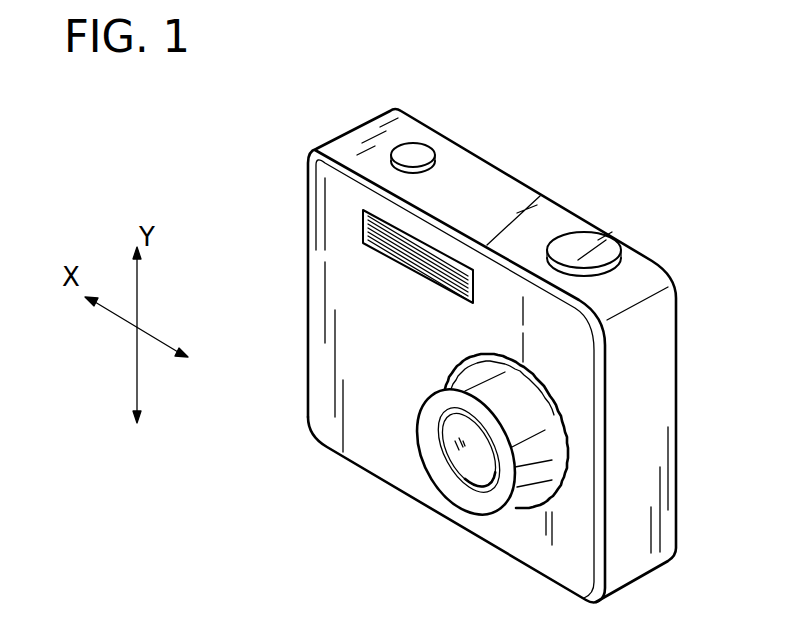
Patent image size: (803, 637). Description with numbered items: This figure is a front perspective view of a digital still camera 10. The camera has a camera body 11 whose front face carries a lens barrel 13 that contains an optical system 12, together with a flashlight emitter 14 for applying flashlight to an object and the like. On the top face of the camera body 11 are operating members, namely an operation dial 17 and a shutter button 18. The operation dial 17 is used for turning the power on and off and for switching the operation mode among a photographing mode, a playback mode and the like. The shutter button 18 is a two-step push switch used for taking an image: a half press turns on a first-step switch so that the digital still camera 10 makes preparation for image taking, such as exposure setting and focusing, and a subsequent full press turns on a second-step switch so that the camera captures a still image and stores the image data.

The digital still camera 10 is at (540, 173).
The camera body 11 is at (318, 388).
The optical system 12 is at (473, 467).
The lens barrel 13 is at (540, 494).
The flashlight emitter 14 is at (393, 253).
The operation dial 17 is at (585, 245).
The shutter button 18 is at (414, 151).